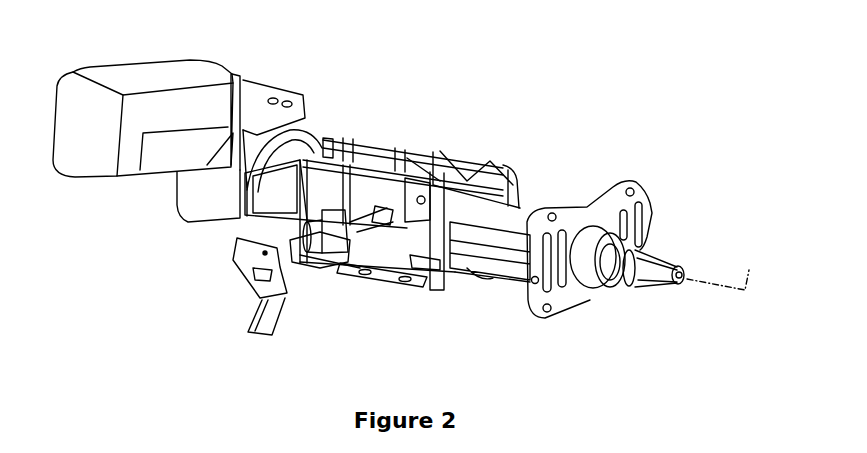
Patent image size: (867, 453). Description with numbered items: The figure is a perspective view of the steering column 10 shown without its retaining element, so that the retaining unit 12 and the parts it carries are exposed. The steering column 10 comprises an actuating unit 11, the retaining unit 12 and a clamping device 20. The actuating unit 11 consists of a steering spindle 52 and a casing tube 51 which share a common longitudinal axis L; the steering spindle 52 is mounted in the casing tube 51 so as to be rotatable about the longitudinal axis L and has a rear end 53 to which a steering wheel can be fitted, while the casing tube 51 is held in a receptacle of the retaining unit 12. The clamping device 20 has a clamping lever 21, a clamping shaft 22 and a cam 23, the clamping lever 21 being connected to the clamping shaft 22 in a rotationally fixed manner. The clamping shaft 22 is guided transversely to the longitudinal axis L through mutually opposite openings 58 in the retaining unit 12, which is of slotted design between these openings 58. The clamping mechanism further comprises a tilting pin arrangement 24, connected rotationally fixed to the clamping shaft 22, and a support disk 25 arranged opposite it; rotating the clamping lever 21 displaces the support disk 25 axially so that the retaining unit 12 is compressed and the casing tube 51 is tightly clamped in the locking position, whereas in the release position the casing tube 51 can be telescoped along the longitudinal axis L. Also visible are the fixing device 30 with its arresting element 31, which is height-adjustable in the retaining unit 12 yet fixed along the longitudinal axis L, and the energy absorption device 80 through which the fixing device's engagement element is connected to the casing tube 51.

The steering column 10 is at (485, 114).
The actuating unit 11 is at (540, 198).
The retaining unit 12 is at (363, 167).
The clamping device 20 is at (263, 253).
The clamping lever 21 is at (268, 322).
The clamping shaft 22 is at (293, 260).
The cam 23 is at (447, 160).
The tilting pin arrangement 24 is at (300, 226).
The support disk 25 is at (357, 262).
The fixing device 30 is at (437, 252).
The arresting element 31 is at (417, 163).
The casing tube 51 is at (556, 210).
The steering spindle 52 is at (648, 228).
The rear end 53 is at (664, 270).
The openings 58 is at (497, 167).
The energy absorption device 80 is at (485, 304).
The longitudinal axis L is at (723, 267).